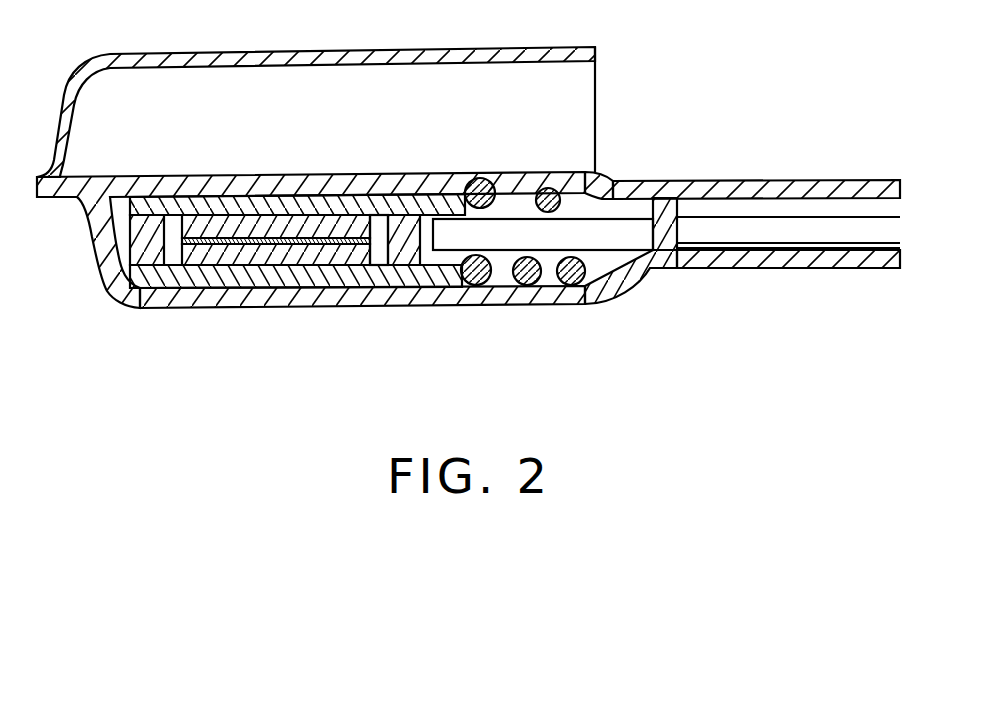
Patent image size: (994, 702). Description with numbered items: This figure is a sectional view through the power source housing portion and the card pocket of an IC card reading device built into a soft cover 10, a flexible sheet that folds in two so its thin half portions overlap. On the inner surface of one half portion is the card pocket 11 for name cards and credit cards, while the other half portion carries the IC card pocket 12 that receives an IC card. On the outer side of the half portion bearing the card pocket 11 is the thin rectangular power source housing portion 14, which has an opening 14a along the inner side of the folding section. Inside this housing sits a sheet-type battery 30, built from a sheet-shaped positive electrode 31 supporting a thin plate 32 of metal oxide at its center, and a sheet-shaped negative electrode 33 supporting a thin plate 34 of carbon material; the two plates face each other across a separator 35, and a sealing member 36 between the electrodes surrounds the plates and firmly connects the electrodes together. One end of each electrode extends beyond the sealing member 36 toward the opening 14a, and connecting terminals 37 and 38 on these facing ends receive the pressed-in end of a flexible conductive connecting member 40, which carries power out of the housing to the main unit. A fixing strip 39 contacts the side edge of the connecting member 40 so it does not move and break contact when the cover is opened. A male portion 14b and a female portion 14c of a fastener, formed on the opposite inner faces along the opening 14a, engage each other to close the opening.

The soft cover 10 is at (733, 178).
The card pocket 11 is at (447, 72).
The IC card pocket 12 is at (833, 183).
The power source housing portion 14 is at (94, 247).
The opening 14a is at (606, 180).
The male portion 14b is at (550, 188).
The female portion 14c is at (573, 288).
The sheet-type battery 30 is at (125, 212).
The positive electrode 31 is at (206, 198).
The thin plate made of metal oxide 32 is at (307, 198).
The negative electrode 33 is at (308, 280).
The thin plate made of a carbon material 34 is at (232, 262).
The separator 35 is at (375, 173).
The sealing member 36 is at (147, 308).
The connecting terminal 37 is at (473, 175).
The connecting terminal 38 is at (473, 273).
The fixing strip 39 is at (678, 232).
The flexible conductive connecting member 40 is at (637, 233).